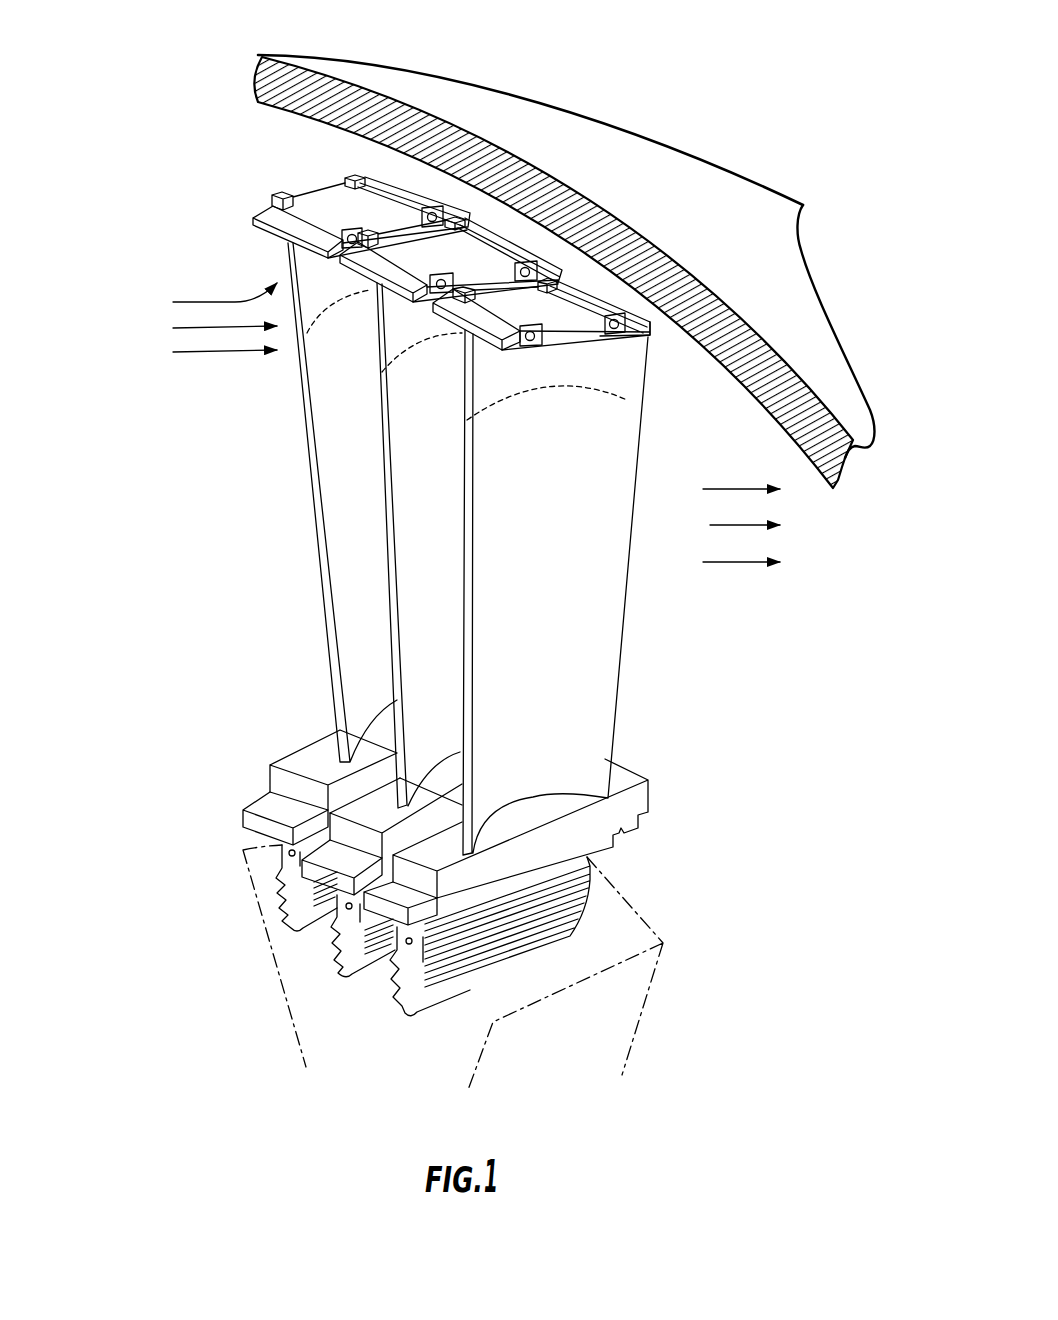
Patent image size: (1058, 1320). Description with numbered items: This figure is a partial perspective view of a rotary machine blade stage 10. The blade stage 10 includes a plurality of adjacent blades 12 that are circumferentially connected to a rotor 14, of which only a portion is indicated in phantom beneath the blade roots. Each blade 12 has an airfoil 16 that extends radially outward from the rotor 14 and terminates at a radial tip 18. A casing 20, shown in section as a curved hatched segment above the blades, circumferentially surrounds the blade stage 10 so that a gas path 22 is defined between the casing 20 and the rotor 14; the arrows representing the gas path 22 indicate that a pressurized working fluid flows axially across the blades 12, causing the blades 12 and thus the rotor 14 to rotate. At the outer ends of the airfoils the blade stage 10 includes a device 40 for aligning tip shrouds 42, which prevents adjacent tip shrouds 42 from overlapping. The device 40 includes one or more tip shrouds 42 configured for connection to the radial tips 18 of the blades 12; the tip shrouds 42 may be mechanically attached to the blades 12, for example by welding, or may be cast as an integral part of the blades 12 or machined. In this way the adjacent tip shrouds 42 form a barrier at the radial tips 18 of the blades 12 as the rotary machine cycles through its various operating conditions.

The rotary machine blade stage 10 is at (188, 821).
The blades 12 is at (493, 612).
The rotor 14 is at (292, 1028).
The airfoil 16 is at (373, 652).
The radial tip 18 is at (650, 340).
The casing 20 is at (558, 210).
The gas path 22 is at (454, 422).
The device for aligning tip shrouds 40 is at (312, 178).
The tip shrouds 42 is at (370, 224).